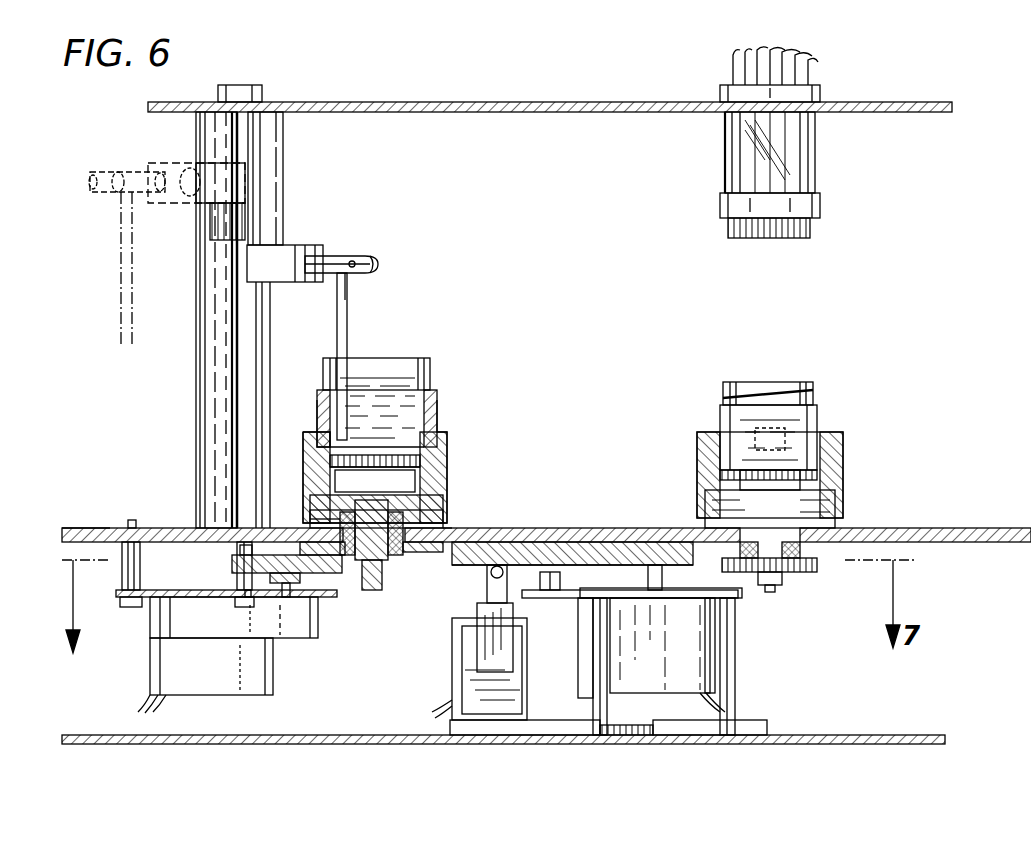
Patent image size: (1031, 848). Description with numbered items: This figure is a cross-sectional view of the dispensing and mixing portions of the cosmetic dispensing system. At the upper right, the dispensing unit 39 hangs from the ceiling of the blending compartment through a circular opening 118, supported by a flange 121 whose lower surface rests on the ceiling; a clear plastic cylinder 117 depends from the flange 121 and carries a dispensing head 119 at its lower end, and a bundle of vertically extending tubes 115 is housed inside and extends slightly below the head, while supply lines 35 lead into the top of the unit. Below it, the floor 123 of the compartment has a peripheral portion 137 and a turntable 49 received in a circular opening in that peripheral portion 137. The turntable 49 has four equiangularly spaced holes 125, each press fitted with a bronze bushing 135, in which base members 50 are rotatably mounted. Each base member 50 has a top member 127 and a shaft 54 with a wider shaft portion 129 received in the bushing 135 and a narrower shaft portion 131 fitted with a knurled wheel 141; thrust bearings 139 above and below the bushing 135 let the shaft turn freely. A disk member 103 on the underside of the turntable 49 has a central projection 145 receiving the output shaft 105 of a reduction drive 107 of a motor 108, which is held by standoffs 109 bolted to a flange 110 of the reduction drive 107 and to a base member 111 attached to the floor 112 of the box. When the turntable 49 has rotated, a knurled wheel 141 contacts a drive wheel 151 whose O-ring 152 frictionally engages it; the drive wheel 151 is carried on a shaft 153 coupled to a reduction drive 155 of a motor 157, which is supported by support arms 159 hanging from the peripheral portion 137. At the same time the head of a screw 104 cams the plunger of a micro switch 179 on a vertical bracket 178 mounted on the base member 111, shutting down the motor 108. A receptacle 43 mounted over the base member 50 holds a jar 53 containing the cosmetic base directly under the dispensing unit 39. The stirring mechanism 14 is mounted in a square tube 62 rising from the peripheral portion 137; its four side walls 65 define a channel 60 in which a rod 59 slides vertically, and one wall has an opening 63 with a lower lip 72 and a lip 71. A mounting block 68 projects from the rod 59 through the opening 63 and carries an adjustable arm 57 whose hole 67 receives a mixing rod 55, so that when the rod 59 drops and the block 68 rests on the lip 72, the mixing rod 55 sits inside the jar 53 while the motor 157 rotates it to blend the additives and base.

The stirring mechanism 14 is at (380, 238).
The conduit tubes 35 is at (748, 66).
The dispensing unit 39 is at (822, 172).
The receptacle 43 is at (840, 468).
The turntable 49 is at (552, 543).
The base member 50 is at (452, 520).
The jar 53 is at (437, 402).
The shaft 54 is at (340, 515).
The mixing rod 55 is at (350, 328).
The arm 57 is at (325, 256).
The rod 59 is at (255, 88).
The channel 60 is at (212, 148).
The square tube 62 is at (215, 440).
The longitudinally extending opening 63 is at (268, 196).
The side wall 65 is at (207, 378).
The hole 67 is at (350, 275).
The mounting block 68 is at (300, 243).
The lip 71 is at (225, 208).
The lower lip 72 is at (250, 282).
The disk member 103 is at (610, 528).
The screw 104 is at (655, 568).
The output shaft 105 is at (558, 590).
The reduction drive 107 is at (700, 620).
The motor 108 is at (710, 665).
The standoff 109 is at (600, 700).
The flange 110 is at (586, 620).
The base member 111 is at (780, 735).
The floor 112 is at (878, 744).
The tube 115 is at (740, 172).
The clear plastic cylinder 117 is at (812, 142).
The circular opening 118 is at (722, 122).
The dispensing head 119 is at (822, 205).
The flange 121 is at (822, 90).
The floor 123 is at (92, 527).
The hole 125 is at (428, 553).
The top member 127 is at (447, 488).
The wider shaft portion 129 is at (352, 575).
The narrower shaft portion 131 is at (382, 570).
The bronze bushing 135 is at (398, 556).
The peripheral portion 137 is at (153, 528).
The thrust bearing 139 is at (305, 505).
The knurled wheel 141 is at (352, 575).
The central projection 145 is at (555, 592).
The drive wheel 151 is at (240, 565).
The O-ring 152 is at (235, 575).
The shaft 153 is at (275, 598).
The reduction drive 155 is at (160, 625).
The motor 157 is at (165, 665).
The support arm 159 is at (128, 580).
The vertical bracket 178 is at (460, 676).
The micro switch 179 is at (478, 612).